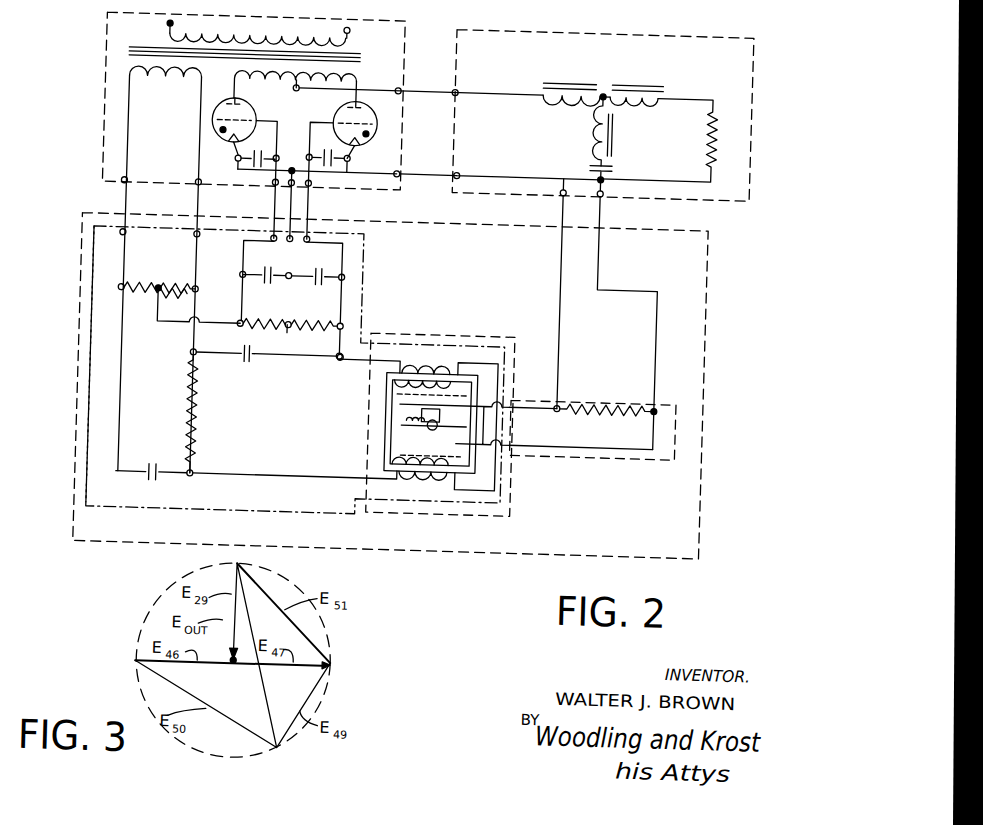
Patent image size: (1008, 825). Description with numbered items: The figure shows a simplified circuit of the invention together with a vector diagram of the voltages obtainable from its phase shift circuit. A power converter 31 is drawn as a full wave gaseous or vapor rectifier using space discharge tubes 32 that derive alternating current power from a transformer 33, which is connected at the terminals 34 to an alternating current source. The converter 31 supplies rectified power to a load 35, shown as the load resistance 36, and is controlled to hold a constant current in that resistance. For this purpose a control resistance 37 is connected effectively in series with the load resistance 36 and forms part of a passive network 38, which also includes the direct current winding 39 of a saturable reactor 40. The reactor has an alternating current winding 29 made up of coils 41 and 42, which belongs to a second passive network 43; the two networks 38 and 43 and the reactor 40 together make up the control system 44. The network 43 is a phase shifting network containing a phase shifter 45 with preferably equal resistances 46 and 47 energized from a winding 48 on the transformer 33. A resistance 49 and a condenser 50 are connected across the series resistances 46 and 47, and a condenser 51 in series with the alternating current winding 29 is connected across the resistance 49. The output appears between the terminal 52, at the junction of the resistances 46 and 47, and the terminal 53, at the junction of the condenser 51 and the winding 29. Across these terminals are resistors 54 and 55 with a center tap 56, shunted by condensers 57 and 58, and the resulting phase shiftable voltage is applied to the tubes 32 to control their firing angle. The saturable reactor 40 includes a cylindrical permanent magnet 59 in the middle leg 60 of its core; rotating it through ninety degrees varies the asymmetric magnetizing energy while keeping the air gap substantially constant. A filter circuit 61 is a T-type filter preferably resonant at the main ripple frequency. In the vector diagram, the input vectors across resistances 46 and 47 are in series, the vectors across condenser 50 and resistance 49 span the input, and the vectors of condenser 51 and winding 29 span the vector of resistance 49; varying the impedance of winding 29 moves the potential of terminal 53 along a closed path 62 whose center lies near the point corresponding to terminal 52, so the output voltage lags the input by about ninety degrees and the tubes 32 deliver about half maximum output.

In FIG. 2, the alternating current winding 29 is at (387, 378).
In FIG. 2, the power converter 31 is at (397, 30).
In FIG. 2, the space discharge tubes 32 is at (250, 119).
In FIG. 2, the transformer 33 is at (381, 50).
In FIG. 2, the terminals 34 is at (162, 29).
In FIG. 2, the load 35 is at (746, 171).
In FIG. 2, the load resistance 36 is at (718, 149).
In FIG. 2, the control resistance 37 is at (625, 403).
In FIG. 2, the passive network 38 is at (650, 455).
In FIG. 2, the direct current winding 39 is at (510, 425).
In FIG. 2, the saturable reactor 40 is at (518, 498).
In FIG. 2, the coil 41 is at (433, 370).
In FIG. 2, the coil 42 is at (431, 477).
In FIG. 2, the second passive network 43 is at (354, 513).
In FIG. 2, the control system 44 is at (530, 551).
In FIG. 2, the phase shifter 45 is at (264, 433).
In FIG. 2, the resistance 46 is at (140, 292).
In FIG. 2, the resistance 47 is at (183, 294).
In FIG. 2, the winding 48 is at (172, 77).
In FIG. 2, the resistance 49 is at (201, 432).
In FIG. 2, the condenser 50 is at (155, 472).
In FIG. 2, the condenser 51 is at (252, 368).
In FIG. 2, the terminal 52 is at (157, 300).
In FIG. 3, the terminal 52 is at (242, 668).
In FIG. 2, the terminal 53 is at (339, 364).
In FIG. 3, the terminal 53 is at (248, 569).
In FIG. 2, the resistor 54 is at (264, 325).
In FIG. 2, the resistor 55 is at (317, 325).
In FIG. 2, the center tap 56 is at (289, 336).
In FIG. 2, the condenser 57 is at (268, 272).
In FIG. 2, the condenser 58 is at (320, 270).
In FIG. 2, the permanent magnet 59 is at (438, 429).
In FIG. 2, the middle leg 60 is at (410, 436).
In FIG. 2, the filter circuit 61 is at (633, 163).
In FIG. 3, the closed path 62 is at (341, 645).